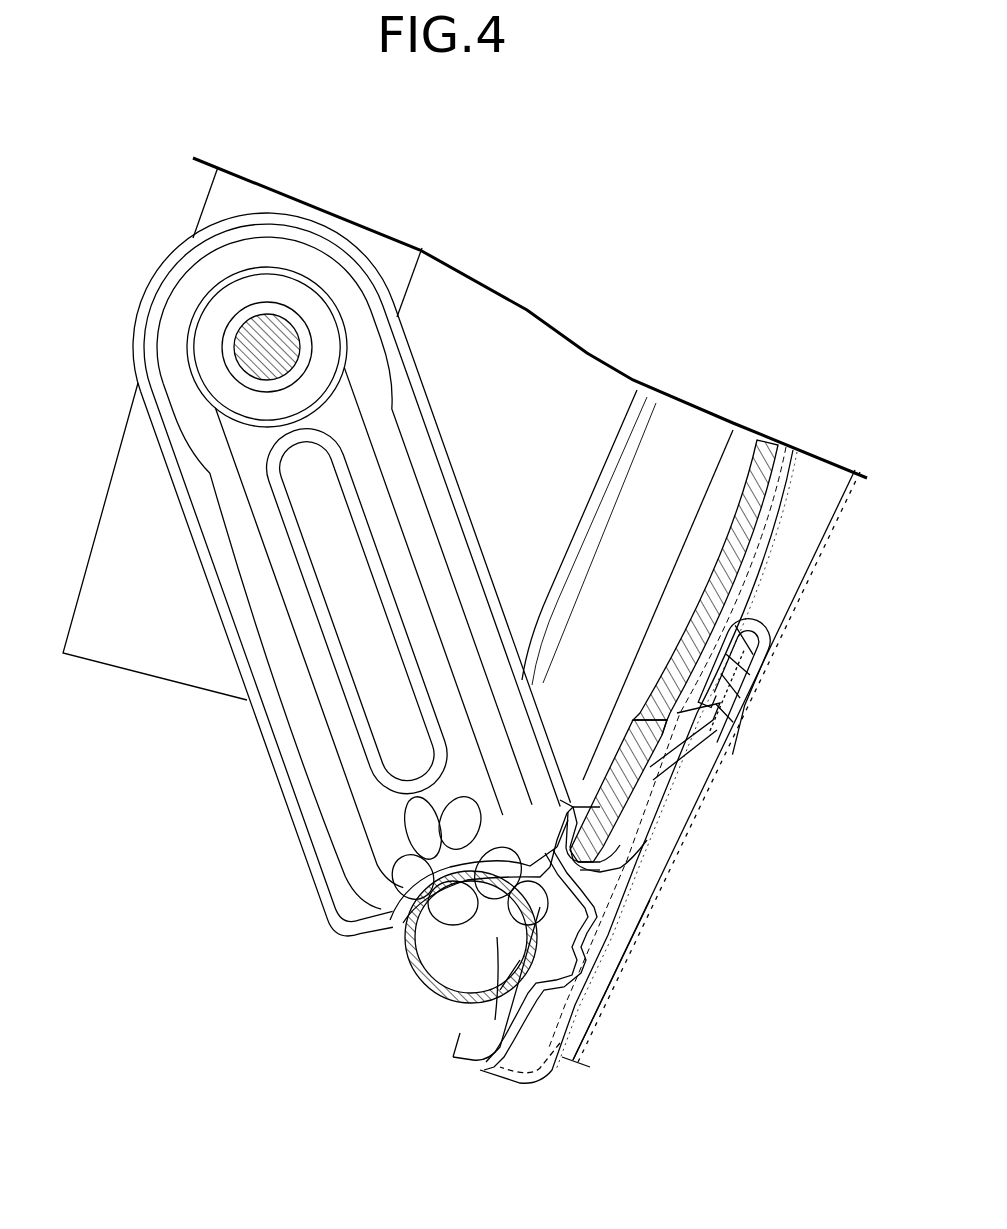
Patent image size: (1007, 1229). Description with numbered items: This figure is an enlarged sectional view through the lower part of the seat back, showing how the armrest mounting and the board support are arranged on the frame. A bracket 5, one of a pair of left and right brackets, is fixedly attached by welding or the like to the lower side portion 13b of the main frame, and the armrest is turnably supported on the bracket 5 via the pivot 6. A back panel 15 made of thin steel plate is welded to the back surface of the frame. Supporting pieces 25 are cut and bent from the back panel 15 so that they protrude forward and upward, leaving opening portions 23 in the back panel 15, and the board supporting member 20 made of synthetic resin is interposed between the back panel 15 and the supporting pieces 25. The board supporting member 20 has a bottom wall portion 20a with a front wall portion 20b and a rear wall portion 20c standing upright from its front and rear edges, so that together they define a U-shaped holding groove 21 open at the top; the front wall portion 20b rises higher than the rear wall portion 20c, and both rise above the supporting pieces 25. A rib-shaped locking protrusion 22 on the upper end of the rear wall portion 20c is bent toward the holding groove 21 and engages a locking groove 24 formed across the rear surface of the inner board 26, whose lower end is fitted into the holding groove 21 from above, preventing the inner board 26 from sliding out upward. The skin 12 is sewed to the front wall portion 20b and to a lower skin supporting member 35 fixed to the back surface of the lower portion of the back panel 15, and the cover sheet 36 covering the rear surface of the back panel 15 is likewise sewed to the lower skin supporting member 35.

The bracket 5 is at (413, 442).
The pivot 6 is at (293, 352).
The skin 12 is at (640, 932).
The lower side portion 13b is at (410, 960).
The back panel 15 is at (763, 527).
The board supporting member 20 is at (591, 752).
The bottom wall portion 20a is at (625, 923).
The front wall portion 20b is at (593, 780).
The rear wall portion 20c is at (617, 853).
The holding groove 21 is at (585, 825).
The locking protrusion 22 is at (625, 790).
The opening portion 23 is at (633, 797).
The locking groove 24 is at (630, 805).
The supporting piece 25 is at (487, 850).
The inner board 26 is at (730, 517).
The lower skin supporting member 35 is at (757, 663).
The cover sheet 36 is at (797, 610).